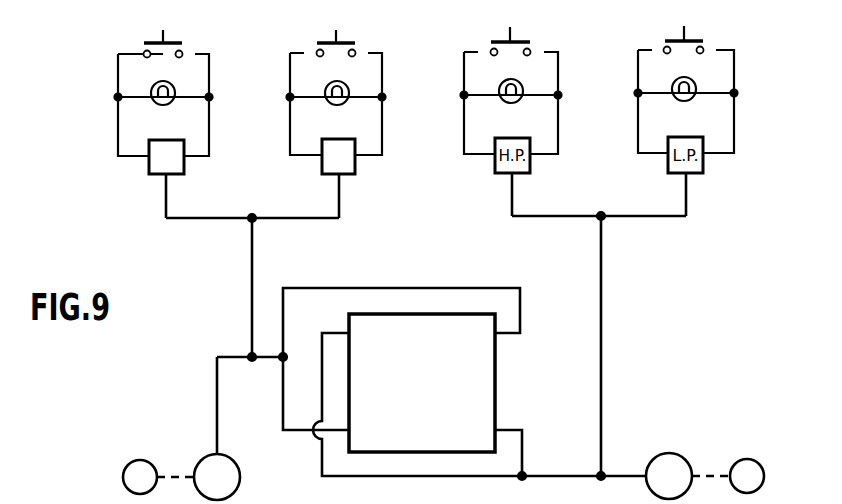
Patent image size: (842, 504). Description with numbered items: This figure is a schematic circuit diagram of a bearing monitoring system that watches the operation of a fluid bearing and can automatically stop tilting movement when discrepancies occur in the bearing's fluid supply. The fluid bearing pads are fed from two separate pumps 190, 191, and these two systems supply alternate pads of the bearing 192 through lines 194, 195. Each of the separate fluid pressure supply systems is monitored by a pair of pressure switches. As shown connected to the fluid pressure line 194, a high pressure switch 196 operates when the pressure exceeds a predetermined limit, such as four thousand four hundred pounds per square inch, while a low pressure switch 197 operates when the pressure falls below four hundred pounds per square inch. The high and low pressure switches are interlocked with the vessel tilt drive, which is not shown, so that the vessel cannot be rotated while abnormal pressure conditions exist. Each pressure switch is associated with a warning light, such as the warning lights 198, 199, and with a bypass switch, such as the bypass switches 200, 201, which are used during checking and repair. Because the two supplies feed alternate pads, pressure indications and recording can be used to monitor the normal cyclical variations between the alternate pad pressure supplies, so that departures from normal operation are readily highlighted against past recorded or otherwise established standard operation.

The pump 190 is at (242, 474).
The pump 191 is at (688, 460).
The bearing 192 is at (409, 395).
The line 194 is at (217, 412).
The line 195 is at (552, 473).
The high pressure switch 196 is at (148, 168).
The low pressure switch 197 is at (324, 171).
The warning light 198 is at (166, 105).
The warning light 199 is at (339, 105).
The bypass switch 200 is at (172, 41).
The bypass switch 201 is at (349, 41).